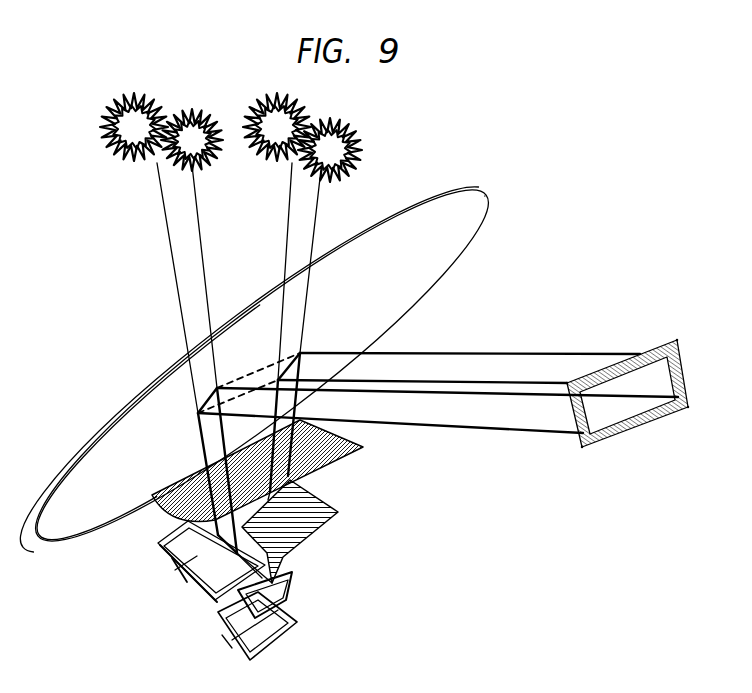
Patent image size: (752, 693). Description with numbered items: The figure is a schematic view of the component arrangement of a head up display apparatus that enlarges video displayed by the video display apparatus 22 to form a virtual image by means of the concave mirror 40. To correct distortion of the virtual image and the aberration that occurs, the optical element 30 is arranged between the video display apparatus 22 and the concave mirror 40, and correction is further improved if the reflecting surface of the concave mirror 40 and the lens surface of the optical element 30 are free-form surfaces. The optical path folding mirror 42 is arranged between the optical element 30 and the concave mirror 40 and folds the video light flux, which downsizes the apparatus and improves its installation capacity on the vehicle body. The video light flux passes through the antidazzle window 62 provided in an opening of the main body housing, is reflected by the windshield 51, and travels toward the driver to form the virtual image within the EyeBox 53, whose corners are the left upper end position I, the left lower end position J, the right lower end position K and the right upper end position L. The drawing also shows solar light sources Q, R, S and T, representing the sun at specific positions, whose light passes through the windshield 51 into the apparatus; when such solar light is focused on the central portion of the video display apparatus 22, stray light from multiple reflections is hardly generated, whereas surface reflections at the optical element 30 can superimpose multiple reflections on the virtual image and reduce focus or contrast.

The video display apparatus 22 is at (290, 623).
The optical element 30 is at (292, 578).
The concave mirror 40 is at (207, 567).
The optical path folding mirror 42 is at (338, 508).
The windshield 51 is at (153, 384).
The EyeBox 53 is at (640, 355).
The antidazzle window 62 is at (167, 497).
The light source Q is at (149, 253).
The light source R is at (192, 248).
The light source S is at (330, 235).
The light source T is at (277, 236).
The left upper end position I is at (558, 381).
The left lower end position J is at (578, 464).
The right lower end position K is at (702, 414).
The right upper end position L is at (684, 341).